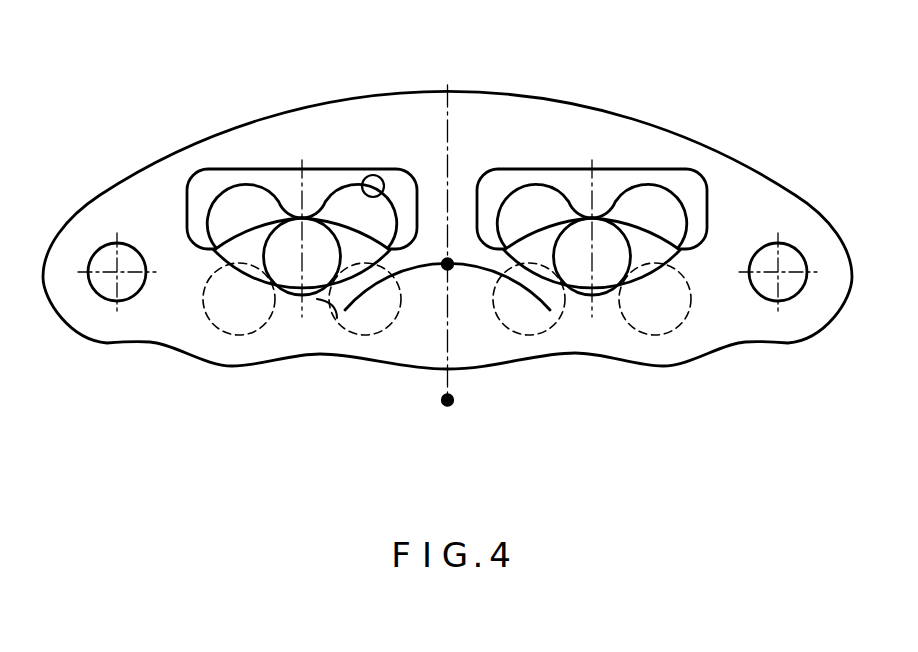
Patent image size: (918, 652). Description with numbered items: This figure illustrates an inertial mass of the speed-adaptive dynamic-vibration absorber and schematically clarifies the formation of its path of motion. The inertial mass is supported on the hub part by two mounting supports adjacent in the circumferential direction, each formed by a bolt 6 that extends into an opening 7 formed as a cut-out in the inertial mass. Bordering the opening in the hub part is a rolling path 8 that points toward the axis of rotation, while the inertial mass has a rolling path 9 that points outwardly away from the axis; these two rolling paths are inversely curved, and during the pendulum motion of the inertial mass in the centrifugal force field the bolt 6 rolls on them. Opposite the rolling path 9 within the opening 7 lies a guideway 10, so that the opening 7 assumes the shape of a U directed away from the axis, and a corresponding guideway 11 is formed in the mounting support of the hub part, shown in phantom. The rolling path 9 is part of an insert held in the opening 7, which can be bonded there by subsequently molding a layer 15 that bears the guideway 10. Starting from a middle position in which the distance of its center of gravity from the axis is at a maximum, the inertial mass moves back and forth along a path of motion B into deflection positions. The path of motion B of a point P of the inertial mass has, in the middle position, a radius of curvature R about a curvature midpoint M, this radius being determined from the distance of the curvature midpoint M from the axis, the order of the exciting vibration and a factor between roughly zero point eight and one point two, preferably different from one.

The bolt 6 is at (280, 268).
The opening 7 is at (222, 207).
The rolling path 8 is at (367, 250).
The rolling path 9 is at (239, 268).
The guideway 10 is at (388, 190).
The guideway 11 is at (337, 318).
The layer 15 is at (285, 180).
The point P is at (449, 262).
The path of motion B is at (540, 312).
The radius of curvature R is at (448, 343).
The curvature midpoint M is at (455, 410).